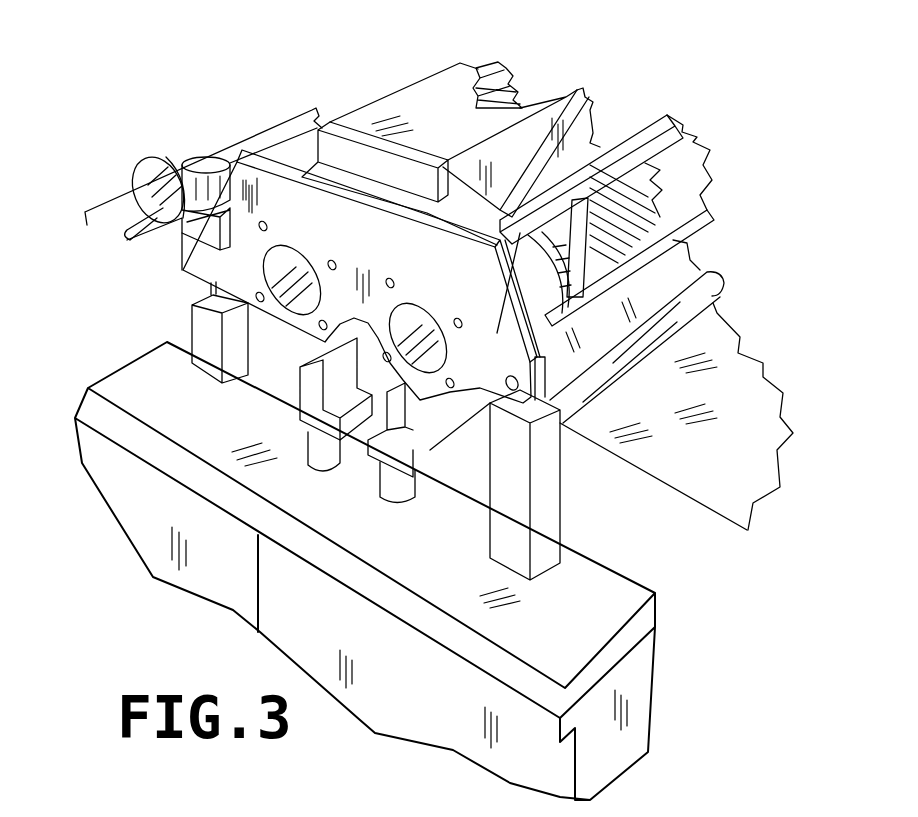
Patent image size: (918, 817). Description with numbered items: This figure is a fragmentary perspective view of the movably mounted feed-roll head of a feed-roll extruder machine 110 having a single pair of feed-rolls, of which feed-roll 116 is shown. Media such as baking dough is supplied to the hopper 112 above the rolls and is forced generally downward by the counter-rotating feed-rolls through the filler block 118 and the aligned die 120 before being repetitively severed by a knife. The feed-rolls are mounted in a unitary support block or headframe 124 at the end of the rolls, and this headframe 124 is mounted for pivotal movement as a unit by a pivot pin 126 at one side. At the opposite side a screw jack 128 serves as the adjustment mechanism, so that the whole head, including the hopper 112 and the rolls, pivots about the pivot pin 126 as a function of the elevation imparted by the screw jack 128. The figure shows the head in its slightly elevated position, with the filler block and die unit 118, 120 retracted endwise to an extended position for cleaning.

The feed-roll extruder machine 110 is at (727, 235).
The hopper 112 is at (455, 80).
The feed-roll 116 is at (513, 100).
The filler block 118 is at (371, 372).
The die 120 is at (357, 475).
The headframe 124 is at (405, 259).
The pivot pin 126 is at (506, 375).
The screw jack 128 is at (180, 155).